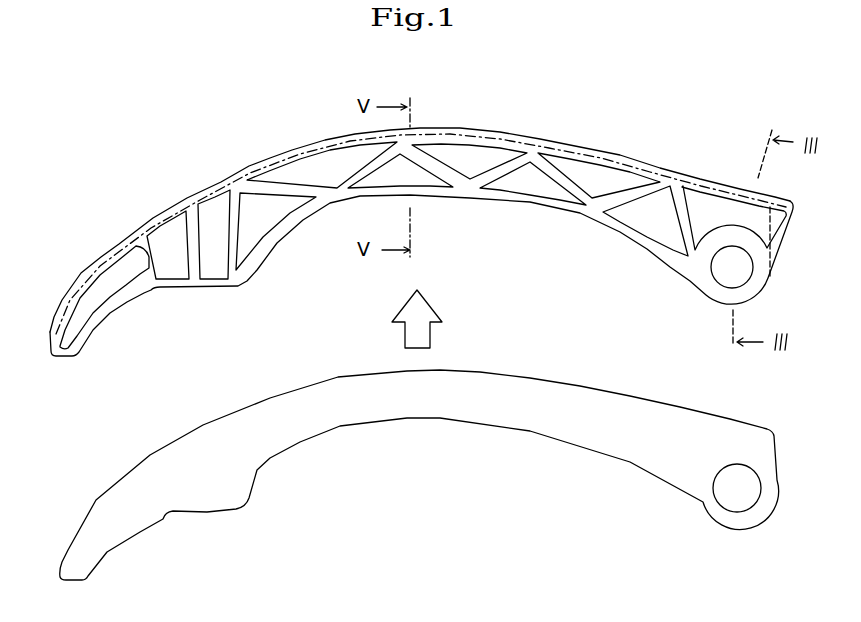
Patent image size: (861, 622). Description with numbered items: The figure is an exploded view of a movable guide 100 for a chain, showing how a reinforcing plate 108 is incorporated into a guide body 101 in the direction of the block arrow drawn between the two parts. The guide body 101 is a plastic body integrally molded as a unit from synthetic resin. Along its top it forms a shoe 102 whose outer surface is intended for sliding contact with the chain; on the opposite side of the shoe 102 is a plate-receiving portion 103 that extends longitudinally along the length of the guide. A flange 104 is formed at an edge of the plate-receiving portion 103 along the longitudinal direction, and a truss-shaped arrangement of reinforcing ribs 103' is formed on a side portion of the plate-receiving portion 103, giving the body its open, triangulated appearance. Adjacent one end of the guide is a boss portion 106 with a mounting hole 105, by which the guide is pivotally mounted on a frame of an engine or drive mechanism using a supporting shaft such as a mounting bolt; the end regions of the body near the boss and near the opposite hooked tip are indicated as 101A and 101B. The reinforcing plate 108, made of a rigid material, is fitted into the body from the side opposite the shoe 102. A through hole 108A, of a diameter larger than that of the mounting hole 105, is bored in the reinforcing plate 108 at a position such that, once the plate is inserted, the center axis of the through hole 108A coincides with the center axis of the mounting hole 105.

The movable guide 100 is at (463, 126).
The guide body 101 is at (796, 216).
The boss-side end portion of lever body 101A is at (673, 282).
The hook-side end portion of lever body 101B is at (213, 300).
The shoe 102 is at (547, 141).
The plate-receiving portion 103 is at (606, 147).
The reinforcing ribs 103' is at (467, 200).
The flange 104 is at (287, 223).
The mounting hole 105 is at (723, 272).
The boss portion 106 is at (765, 278).
The reinforcing plate 108 is at (493, 410).
The through hole 108A is at (713, 507).